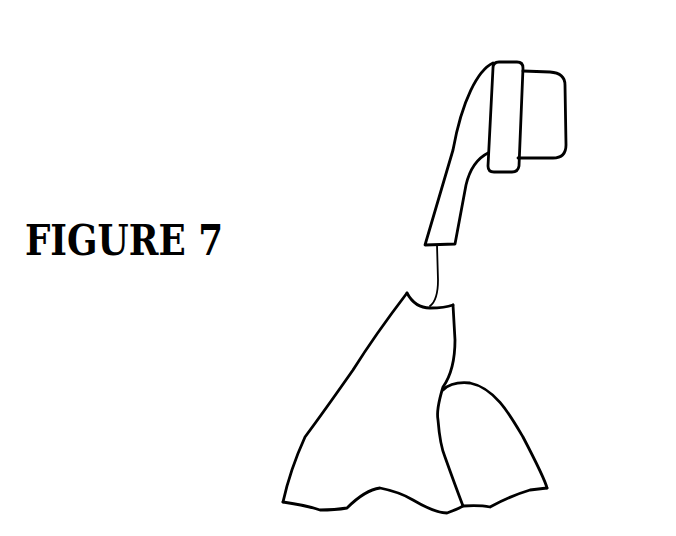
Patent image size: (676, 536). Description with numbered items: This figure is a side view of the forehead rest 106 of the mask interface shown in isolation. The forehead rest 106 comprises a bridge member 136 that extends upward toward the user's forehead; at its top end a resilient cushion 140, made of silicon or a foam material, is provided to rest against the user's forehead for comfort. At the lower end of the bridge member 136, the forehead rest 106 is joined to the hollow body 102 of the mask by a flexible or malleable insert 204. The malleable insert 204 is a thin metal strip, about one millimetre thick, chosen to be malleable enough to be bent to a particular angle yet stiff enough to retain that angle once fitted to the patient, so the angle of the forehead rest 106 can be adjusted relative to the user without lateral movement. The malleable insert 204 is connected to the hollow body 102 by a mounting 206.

The forehead rest 106 is at (445, 83).
The bridge member 136 is at (435, 190).
The resilient cushion 140 is at (555, 72).
The malleable insert 204 is at (435, 277).
The hollow body 102 is at (305, 440).
The mounting 206 is at (353, 370).